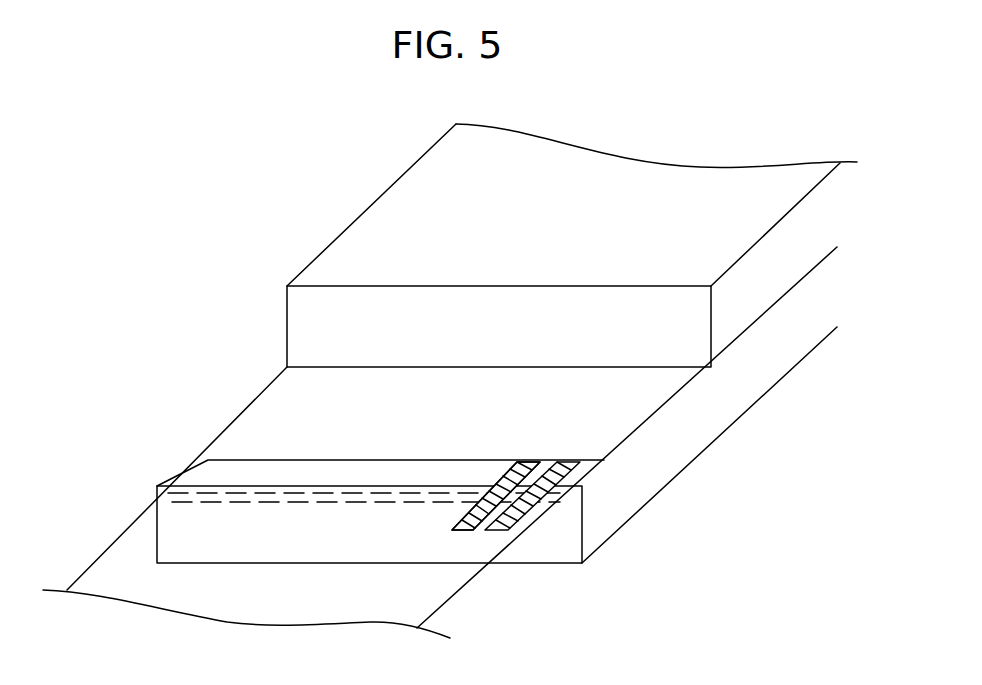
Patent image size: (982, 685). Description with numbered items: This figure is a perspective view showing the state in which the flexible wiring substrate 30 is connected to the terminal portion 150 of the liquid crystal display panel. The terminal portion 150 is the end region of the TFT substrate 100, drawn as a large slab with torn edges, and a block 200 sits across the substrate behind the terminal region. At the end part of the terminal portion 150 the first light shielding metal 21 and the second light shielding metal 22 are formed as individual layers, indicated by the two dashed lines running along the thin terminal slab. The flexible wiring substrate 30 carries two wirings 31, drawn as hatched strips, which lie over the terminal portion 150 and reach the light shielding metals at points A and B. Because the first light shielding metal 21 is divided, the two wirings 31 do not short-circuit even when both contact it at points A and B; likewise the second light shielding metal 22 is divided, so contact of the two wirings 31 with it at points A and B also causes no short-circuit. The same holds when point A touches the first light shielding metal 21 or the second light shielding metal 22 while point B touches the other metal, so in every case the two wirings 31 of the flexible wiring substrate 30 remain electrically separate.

The TFT substrate 100 is at (750, 382).
The terminal portion 150 is at (635, 412).
The block 200 is at (358, 218).
The flexible wiring substrate 30 is at (463, 587).
The wirings 31 is at (458, 519).
The first light shielding metal 21 is at (248, 494).
The second light shielding metal 22 is at (311, 503).
The point A is at (502, 490).
The point B is at (543, 488).